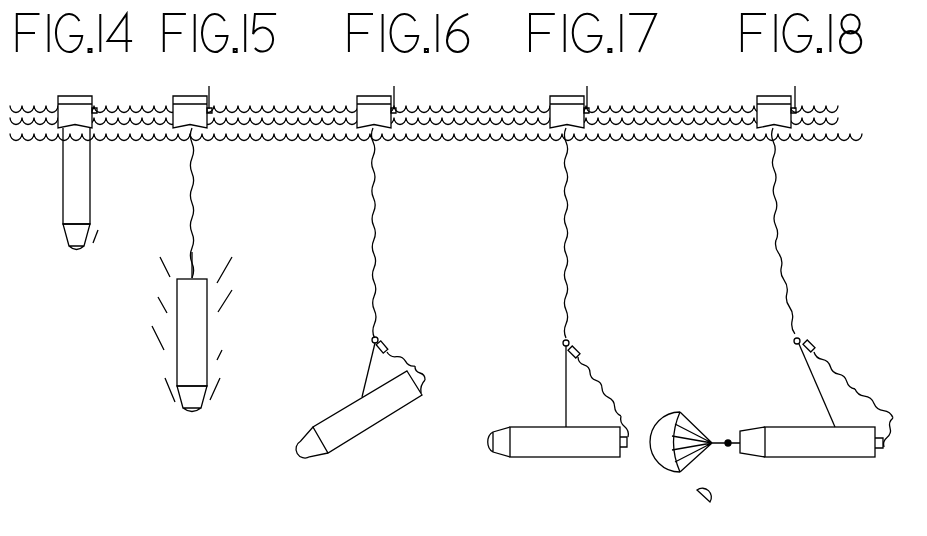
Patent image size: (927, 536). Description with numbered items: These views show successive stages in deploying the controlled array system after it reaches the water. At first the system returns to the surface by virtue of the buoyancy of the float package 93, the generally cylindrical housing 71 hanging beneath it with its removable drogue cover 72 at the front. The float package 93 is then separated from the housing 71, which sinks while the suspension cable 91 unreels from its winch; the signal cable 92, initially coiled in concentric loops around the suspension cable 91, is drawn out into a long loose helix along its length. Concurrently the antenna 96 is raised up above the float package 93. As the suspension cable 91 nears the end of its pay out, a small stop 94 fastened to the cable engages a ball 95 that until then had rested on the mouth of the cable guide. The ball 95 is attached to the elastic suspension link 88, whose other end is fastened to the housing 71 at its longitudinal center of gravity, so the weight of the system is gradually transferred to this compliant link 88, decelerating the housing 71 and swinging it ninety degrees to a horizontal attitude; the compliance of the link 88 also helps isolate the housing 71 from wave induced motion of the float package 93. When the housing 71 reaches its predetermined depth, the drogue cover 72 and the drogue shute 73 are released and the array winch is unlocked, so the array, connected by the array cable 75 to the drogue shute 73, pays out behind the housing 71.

In FIG. 14, the housing 71 is at (98, 180).
In FIG. 15, the housing 71 is at (173, 354).
In FIG. 16, the housing 71 is at (358, 440).
In FIG. 17, the housing 71 is at (572, 459).
In FIG. 18, the housing 71 is at (803, 458).
In FIG. 14, the drogue cover 72 is at (76, 258).
In FIG. 15, the drogue cover 72 is at (194, 417).
In FIG. 16, the drogue cover 72 is at (300, 463).
In FIG. 17, the drogue cover 72 is at (488, 450).
In FIG. 18, the drogue cover 72 is at (714, 490).
In FIG. 18, the drogue shute 73 is at (662, 477).
In FIG. 18, the array cable 75 is at (730, 430).
In FIG. 16, the elastic suspension link 88 is at (362, 382).
In FIG. 15, the suspension cable 91 is at (199, 204).
In FIG. 15, the signal cable 92 is at (197, 252).
In FIG. 14, the float package 93 is at (86, 95).
In FIG. 15, the float package 93 is at (184, 95).
In FIG. 16, the float package 93 is at (363, 95).
In FIG. 17, the float package 93 is at (555, 95).
In FIG. 18, the float package 93 is at (761, 94).
In FIG. 16, the stop 94 is at (392, 338).
In FIG. 17, the stop 94 is at (588, 343).
In FIG. 18, the stop 94 is at (815, 333).
In FIG. 16, the ball 95 is at (372, 340).
In FIG. 17, the ball 95 is at (563, 340).
In FIG. 18, the ball 95 is at (791, 335).
In FIG. 15, the antenna 96 is at (209, 83).
In FIG. 16, the antenna 96 is at (402, 81).
In FIG. 17, the antenna 96 is at (595, 82).
In FIG. 18, the antenna 96 is at (800, 82).